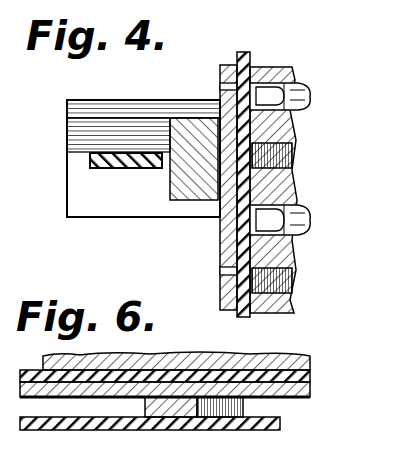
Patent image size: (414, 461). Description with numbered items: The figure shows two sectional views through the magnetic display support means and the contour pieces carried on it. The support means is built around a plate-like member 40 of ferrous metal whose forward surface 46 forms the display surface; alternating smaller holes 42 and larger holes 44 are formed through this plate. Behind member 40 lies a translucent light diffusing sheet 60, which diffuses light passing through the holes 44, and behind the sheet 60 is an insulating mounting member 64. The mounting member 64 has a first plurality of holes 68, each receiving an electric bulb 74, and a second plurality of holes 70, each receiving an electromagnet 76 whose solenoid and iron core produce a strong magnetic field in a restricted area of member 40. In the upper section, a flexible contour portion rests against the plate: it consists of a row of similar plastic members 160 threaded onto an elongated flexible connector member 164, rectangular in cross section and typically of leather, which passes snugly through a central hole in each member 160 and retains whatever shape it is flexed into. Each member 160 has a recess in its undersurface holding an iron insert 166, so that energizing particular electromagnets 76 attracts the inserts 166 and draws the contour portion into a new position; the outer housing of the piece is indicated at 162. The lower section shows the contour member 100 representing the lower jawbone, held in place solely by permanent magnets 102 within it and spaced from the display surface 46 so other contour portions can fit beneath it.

In FIG. 4, the plate-like member 40 is at (227, 64).
In FIG. 6, the plate-like member 40 is at (20, 390).
In FIG. 4, the holes 42 is at (200, 283).
In FIG. 4, the holes 44 is at (220, 88).
In FIG. 4, the forward surface 46 is at (222, 302).
In FIG. 6, the forward surface 46 is at (302, 400).
In FIG. 4, the sheet 60 is at (246, 52).
In FIG. 6, the sheet 60 is at (36, 370).
In FIG. 6, the mounting member 64 is at (142, 355).
In FIG. 4, the first plurality of holes 68 is at (236, 211).
In FIG. 4, the second plurality of holes 70 is at (252, 110).
In FIG. 4, the electric bulb 74 is at (296, 112).
In FIG. 4, the electromagnet 76 is at (298, 164).
In FIG. 6, the contour member 100 is at (94, 432).
In FIG. 6, the permanent magnets 102 is at (192, 420).
In FIG. 4, the members 160 is at (106, 100).
In FIG. 4, the housing 162 is at (118, 218).
In FIG. 4, the connector member 164 is at (106, 168).
In FIG. 4, the insert 166 is at (180, 217).